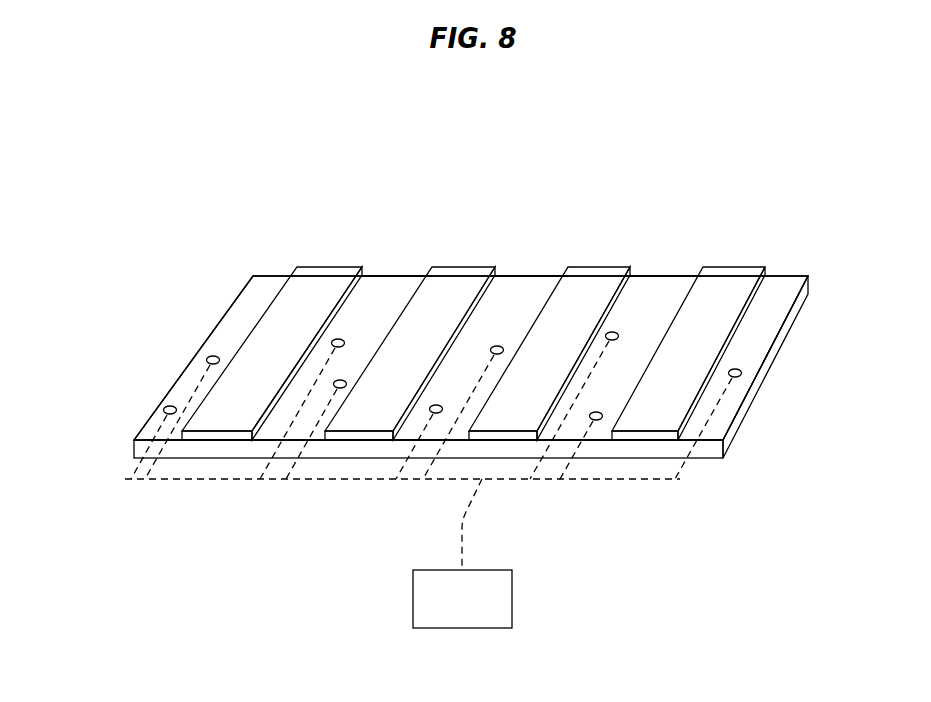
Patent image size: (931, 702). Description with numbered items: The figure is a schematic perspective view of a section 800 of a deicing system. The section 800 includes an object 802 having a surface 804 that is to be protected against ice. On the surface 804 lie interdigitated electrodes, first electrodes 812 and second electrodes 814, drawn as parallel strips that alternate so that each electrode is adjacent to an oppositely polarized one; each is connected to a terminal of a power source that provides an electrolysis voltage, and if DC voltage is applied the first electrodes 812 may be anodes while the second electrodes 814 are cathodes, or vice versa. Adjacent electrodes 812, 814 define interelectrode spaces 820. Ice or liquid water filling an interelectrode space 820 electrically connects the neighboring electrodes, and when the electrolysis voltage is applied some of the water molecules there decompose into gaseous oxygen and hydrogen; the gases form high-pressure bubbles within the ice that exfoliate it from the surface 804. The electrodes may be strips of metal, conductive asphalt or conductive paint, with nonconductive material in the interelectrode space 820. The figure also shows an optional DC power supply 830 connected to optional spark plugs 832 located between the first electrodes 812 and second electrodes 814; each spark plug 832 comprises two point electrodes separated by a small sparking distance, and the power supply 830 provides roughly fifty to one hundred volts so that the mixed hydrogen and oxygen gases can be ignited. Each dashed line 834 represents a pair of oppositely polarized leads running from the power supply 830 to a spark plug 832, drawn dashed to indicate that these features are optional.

The section 800 is at (438, 160).
The object 802 is at (605, 451).
The surface 804 is at (250, 308).
The first electrodes 812 is at (455, 283).
The second electrodes 814 is at (320, 282).
The interelectrode space 820 is at (397, 309).
The DC power supply 830 is at (413, 594).
The spark plugs 832 is at (333, 343).
The dashed line 834 is at (714, 418).